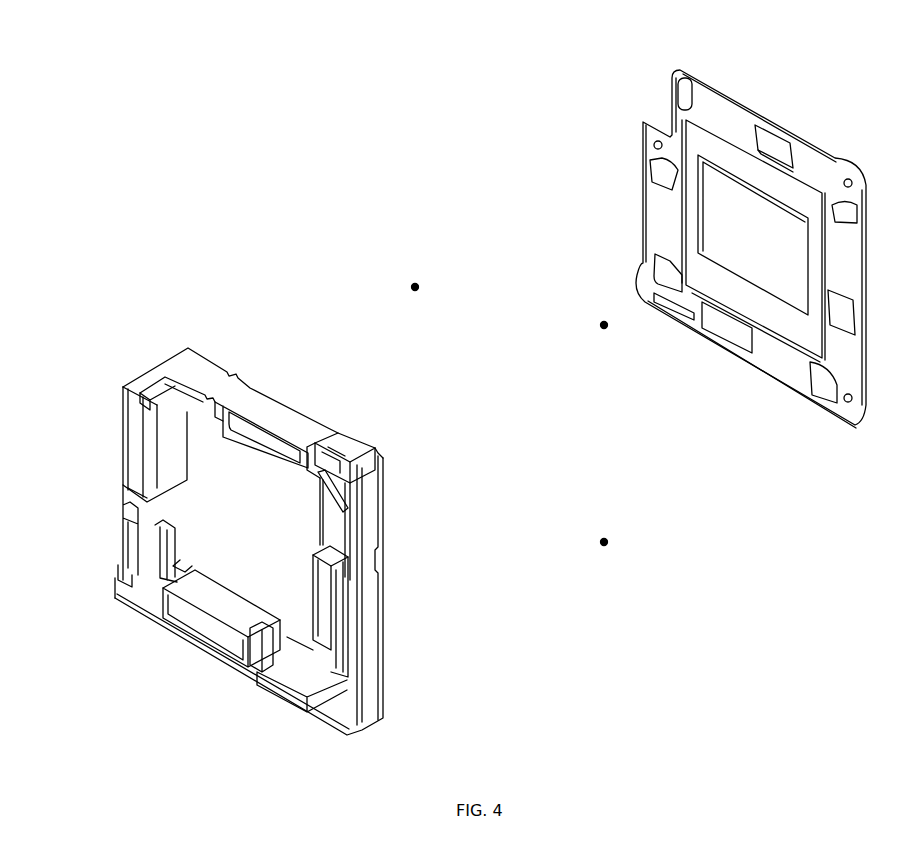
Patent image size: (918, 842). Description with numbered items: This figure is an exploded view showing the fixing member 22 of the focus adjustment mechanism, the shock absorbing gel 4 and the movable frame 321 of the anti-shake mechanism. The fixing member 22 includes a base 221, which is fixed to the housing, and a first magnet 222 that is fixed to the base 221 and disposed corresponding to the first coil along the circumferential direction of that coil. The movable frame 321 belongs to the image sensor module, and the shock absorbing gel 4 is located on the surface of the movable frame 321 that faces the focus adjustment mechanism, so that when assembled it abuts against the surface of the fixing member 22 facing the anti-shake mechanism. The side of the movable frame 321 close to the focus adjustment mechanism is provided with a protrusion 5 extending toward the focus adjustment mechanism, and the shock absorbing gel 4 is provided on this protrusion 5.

The fixing member 22 is at (45, 384).
The base 221 is at (133, 393).
The first magnet 222 is at (140, 453).
The movable frame 321 is at (722, 110).
The shock absorbing gel 4 is at (412, 283).
The protrusion 5 is at (850, 407).